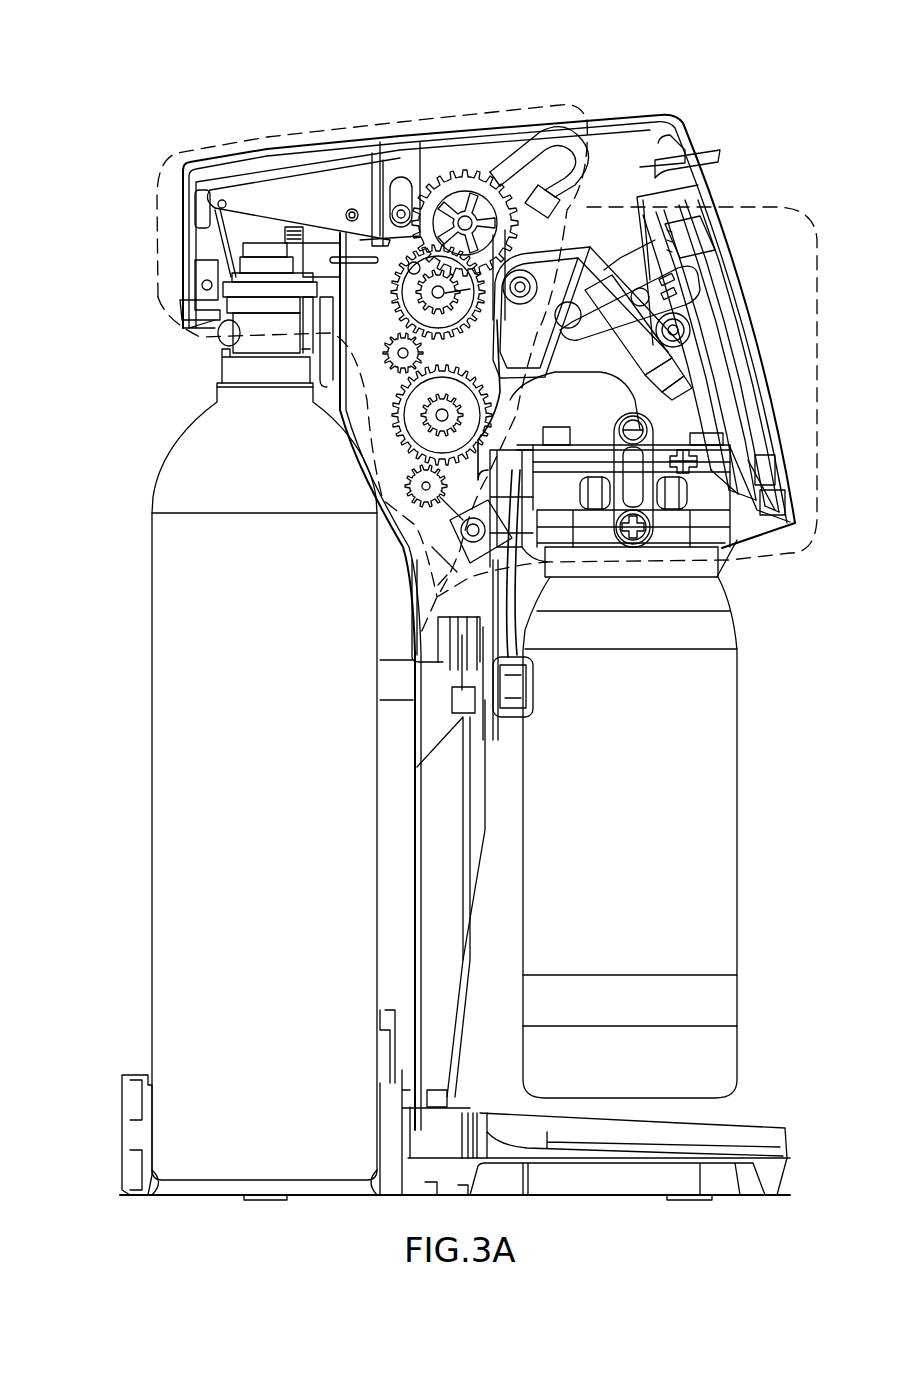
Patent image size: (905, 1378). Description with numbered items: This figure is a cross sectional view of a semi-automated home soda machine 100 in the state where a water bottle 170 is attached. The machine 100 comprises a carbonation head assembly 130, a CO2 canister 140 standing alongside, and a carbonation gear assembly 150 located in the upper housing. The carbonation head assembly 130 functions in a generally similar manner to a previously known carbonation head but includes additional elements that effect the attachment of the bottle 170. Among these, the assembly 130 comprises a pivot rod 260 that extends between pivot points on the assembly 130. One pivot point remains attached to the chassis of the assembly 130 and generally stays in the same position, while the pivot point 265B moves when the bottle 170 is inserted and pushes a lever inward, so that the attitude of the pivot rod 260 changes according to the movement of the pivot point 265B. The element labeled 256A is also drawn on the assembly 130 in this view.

The semi-automated home soda machine 100 is at (644, 63).
The carbonation head assembly 130 is at (745, 207).
The CO2 canister 140 is at (152, 845).
The carbonation gear assembly 150 is at (157, 245).
The water bottle 170 is at (737, 823).
The fastener 256A is at (655, 470).
The pivot rod 260 is at (648, 420).
The pivot point 265B is at (660, 545).